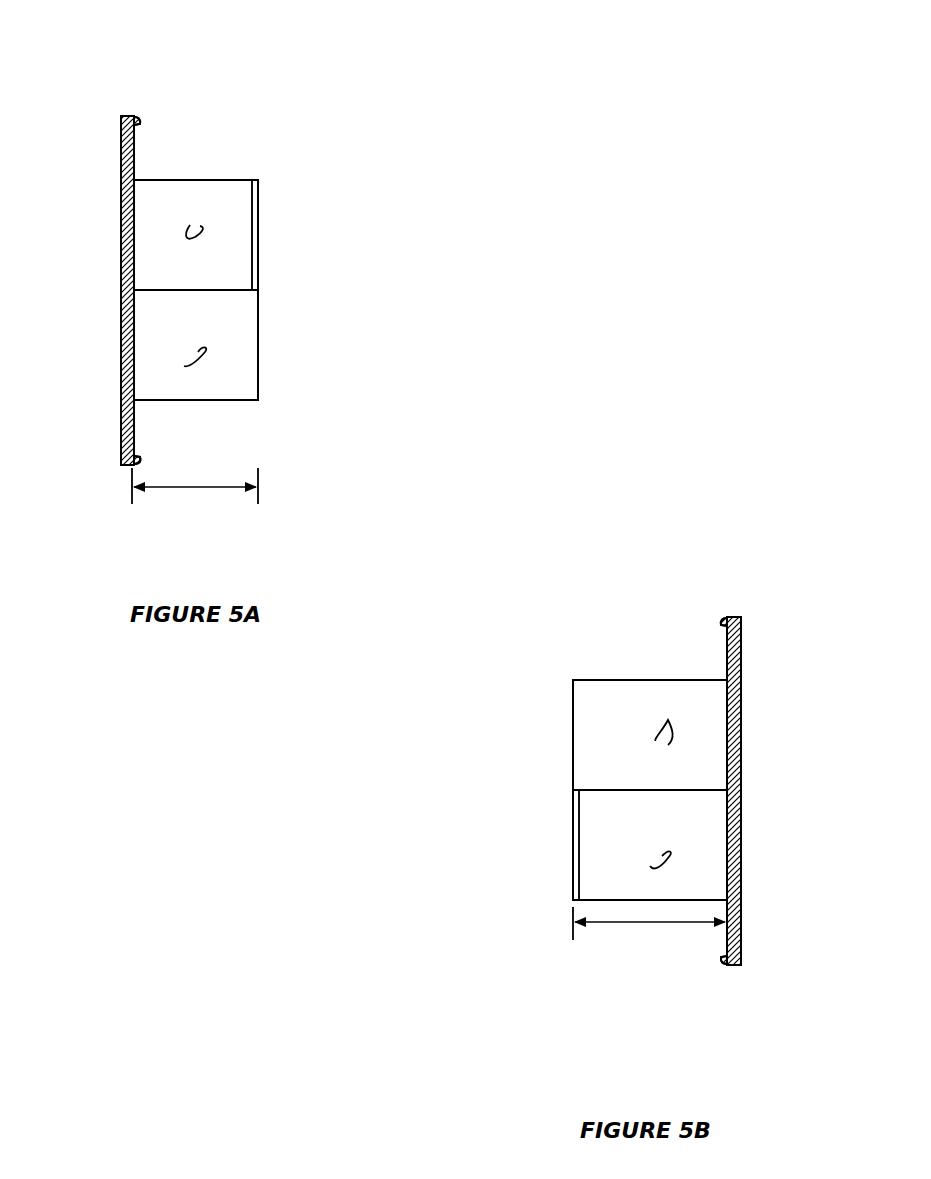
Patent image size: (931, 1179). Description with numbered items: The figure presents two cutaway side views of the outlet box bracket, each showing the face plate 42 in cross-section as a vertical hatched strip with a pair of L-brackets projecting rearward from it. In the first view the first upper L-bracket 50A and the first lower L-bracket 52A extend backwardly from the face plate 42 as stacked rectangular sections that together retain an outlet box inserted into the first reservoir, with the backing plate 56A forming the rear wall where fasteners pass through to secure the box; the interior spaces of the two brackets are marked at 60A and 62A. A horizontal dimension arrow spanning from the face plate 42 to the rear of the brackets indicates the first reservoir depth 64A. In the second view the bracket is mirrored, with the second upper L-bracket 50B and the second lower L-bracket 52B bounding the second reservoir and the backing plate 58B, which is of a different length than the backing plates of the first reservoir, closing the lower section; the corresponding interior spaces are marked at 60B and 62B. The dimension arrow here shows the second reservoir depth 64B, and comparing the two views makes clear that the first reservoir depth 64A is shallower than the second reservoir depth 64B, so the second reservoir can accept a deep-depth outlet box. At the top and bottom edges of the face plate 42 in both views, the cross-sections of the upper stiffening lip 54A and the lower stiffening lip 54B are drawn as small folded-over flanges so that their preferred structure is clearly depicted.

In FIG. 5A, the face plate 42 is at (121, 185).
In FIG. 5B, the face plate 42 is at (741, 868).
In FIG. 5A, the first upper L-bracket 50A is at (304, 179).
In FIG. 5B, the second upper L-bracket 50B is at (556, 706).
In FIG. 5A, the first lower L-bracket 52A is at (342, 327).
In FIG. 5B, the second lower L-bracket 52B is at (556, 843).
In FIG. 5A, the upper stiffening lip 54A is at (142, 111).
In FIG. 5B, the upper stiffening lip 54A is at (722, 612).
In FIG. 5A, the lower stiffening lip 54B is at (126, 470).
In FIG. 5B, the lower stiffening lip 54B is at (733, 978).
In FIG. 5A, the backing plate 56A is at (258, 247).
In FIG. 5B, the backing plate 58B is at (573, 878).
In FIG. 5A, the upper cavity 60A is at (192, 224).
In FIG. 5B, the upper cavity 60B is at (668, 745).
In FIG. 5A, the lower cavity 62A is at (200, 352).
In FIG. 5B, the lower cavity 62B is at (660, 856).
In FIG. 5A, the first reservoir depth 64A is at (193, 488).
In FIG. 5B, the second reservoir depth 64B is at (652, 925).